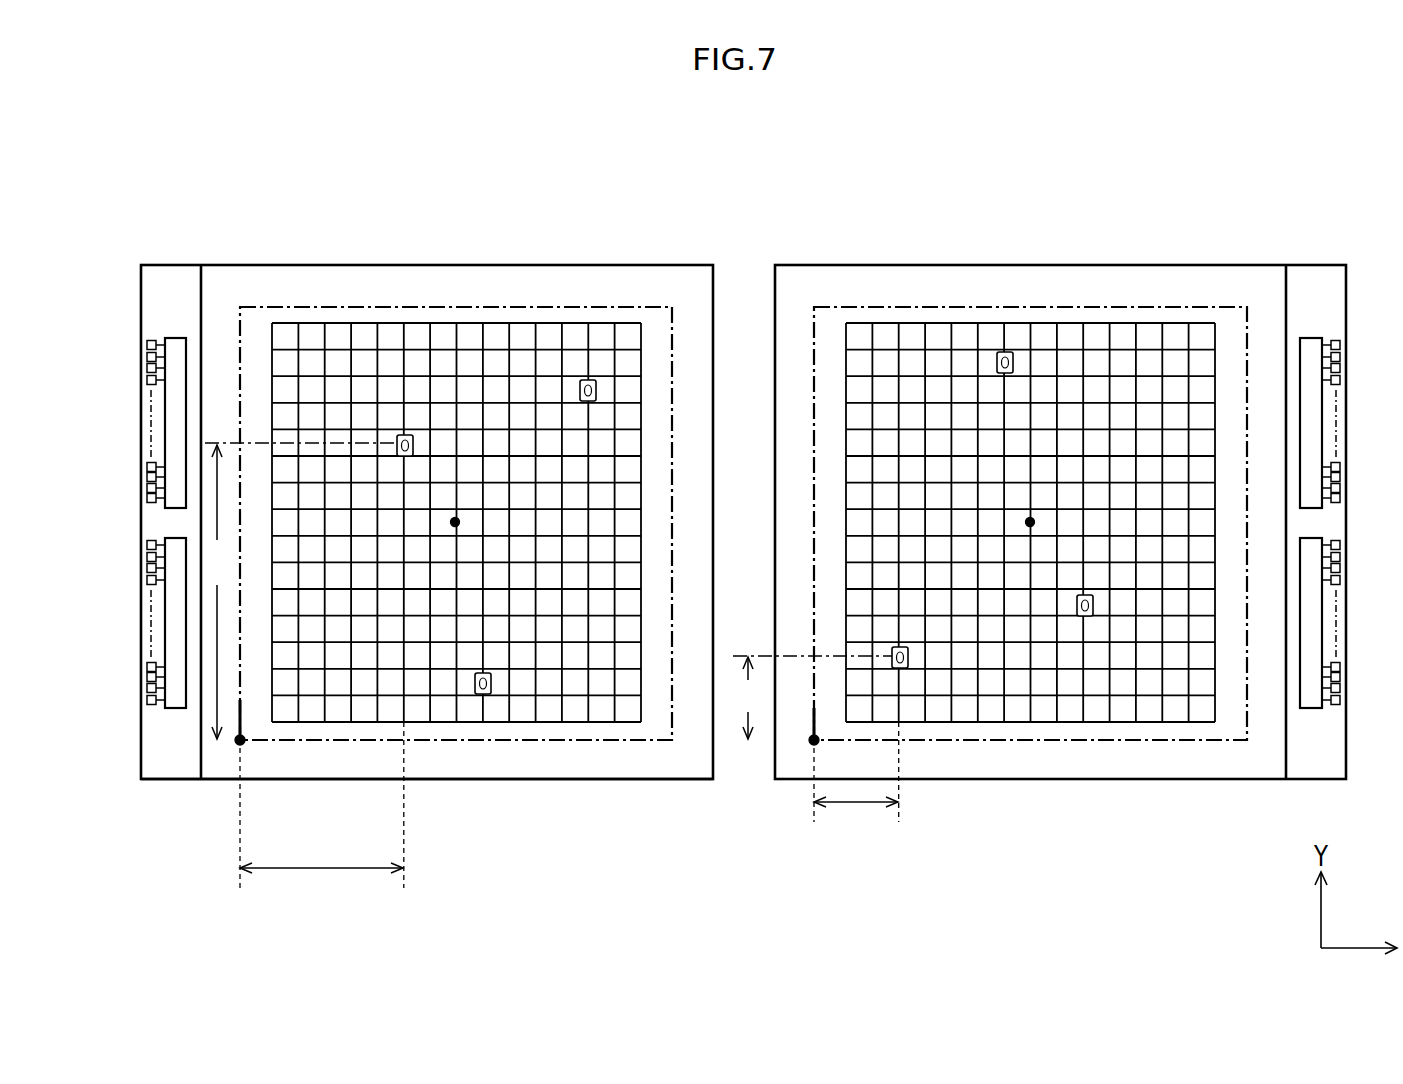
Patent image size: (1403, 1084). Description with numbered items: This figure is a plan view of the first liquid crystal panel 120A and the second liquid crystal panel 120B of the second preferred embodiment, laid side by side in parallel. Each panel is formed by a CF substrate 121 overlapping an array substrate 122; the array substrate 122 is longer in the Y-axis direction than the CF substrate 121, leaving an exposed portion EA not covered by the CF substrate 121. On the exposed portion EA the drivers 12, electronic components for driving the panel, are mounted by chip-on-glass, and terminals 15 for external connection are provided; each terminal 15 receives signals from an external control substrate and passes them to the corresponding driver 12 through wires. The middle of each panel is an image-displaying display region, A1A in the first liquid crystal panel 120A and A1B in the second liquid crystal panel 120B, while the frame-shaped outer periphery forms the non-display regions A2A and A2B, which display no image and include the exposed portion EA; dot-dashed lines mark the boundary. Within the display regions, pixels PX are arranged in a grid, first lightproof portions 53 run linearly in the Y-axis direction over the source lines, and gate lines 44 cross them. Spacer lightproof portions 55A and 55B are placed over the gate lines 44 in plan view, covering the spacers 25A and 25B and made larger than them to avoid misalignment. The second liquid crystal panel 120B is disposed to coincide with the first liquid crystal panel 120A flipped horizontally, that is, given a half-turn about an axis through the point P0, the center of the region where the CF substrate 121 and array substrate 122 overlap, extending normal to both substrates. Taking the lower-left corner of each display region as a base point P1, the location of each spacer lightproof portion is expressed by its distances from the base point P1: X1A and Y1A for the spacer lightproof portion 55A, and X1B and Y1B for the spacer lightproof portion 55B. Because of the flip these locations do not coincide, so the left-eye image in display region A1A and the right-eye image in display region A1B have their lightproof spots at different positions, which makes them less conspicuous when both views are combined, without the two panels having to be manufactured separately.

The first liquid crystal panel 120A is at (473, 195).
The second liquid crystal panel 120B is at (1014, 195).
The driver 12 is at (177, 338).
The terminal 15 is at (150, 348).
The exposed portion EA is at (160, 748).
The array substrate 122 is at (168, 770).
The CF substrate 121 is at (272, 765).
The display region of first liquid crystal panel A1A is at (552, 305).
The non-display region of first liquid crystal panel A2A is at (641, 287).
The display region of second liquid crystal panel A1B is at (1174, 305).
The non-display region of second liquid crystal panel A2B is at (1263, 287).
The pixel PX is at (286, 338).
The first lightproof portion 53 is at (523, 698).
The gate line 44 is at (588, 710).
The spacer lightproof portion of first liquid crystal panel 55A is at (408, 437).
The spacer lightproof portion of second liquid crystal panel 55B is at (1013, 362).
The spacer of first liquid crystal panel 25A is at (396, 440).
The spacer of second liquid crystal panel 25B is at (995, 362).
The center point P0 is at (456, 503).
The base point P1 is at (252, 722).
The Y-axis distance of spacer lightproof portion 55A Y1A is at (215, 592).
The X-axis distance of spacer lightproof portion 55A X1A is at (322, 814).
The Y-axis distance of spacer lightproof portion 55B Y1B is at (748, 698).
The X-axis distance of spacer lightproof portion 55B X1B is at (856, 782).